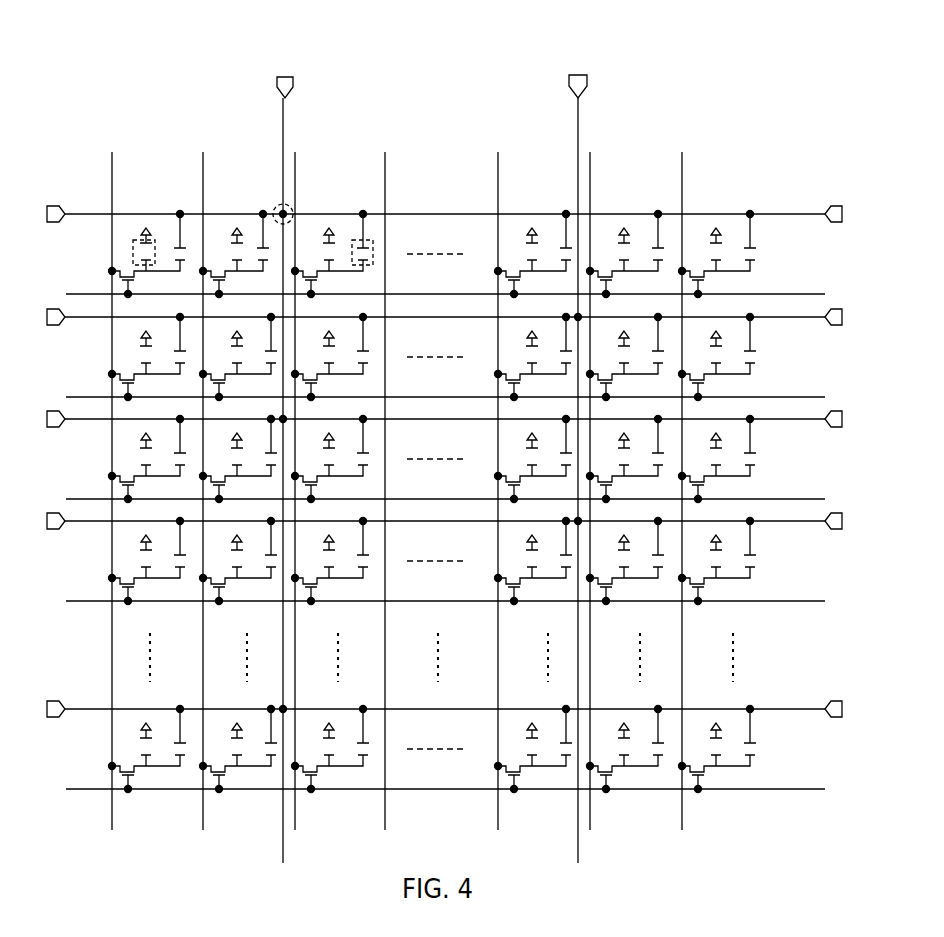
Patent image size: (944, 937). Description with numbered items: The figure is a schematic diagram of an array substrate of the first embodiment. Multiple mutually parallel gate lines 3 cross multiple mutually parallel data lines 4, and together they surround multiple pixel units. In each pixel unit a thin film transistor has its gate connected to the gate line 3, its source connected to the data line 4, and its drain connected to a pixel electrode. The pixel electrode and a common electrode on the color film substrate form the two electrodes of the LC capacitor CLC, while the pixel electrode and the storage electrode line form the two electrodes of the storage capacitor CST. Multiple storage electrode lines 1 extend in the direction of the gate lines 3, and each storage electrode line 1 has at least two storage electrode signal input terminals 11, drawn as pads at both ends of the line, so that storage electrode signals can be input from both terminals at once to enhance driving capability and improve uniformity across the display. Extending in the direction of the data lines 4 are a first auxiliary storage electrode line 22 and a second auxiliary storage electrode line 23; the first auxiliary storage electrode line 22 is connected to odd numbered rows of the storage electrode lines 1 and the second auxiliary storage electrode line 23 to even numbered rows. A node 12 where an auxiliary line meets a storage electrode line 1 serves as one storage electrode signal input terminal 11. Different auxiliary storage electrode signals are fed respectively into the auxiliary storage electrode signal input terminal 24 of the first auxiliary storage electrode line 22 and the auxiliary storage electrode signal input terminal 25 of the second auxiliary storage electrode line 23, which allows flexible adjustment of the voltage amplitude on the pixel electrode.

The storage electrode line 1 is at (790, 212).
The gate line 3 is at (417, 293).
The data line 4 is at (500, 178).
The storage electrode signal input terminal 11 is at (55, 214).
The node 12 is at (278, 208).
The first auxiliary storage electrode line 22 is at (286, 145).
The second auxiliary storage electrode line 23 is at (580, 138).
The auxiliary storage electrode signal input terminal 24 is at (287, 76).
The auxiliary storage electrode signal input terminal 25 is at (579, 75).
The LC capacitor CLC is at (155, 238).
The storage capacitor CST is at (352, 243).